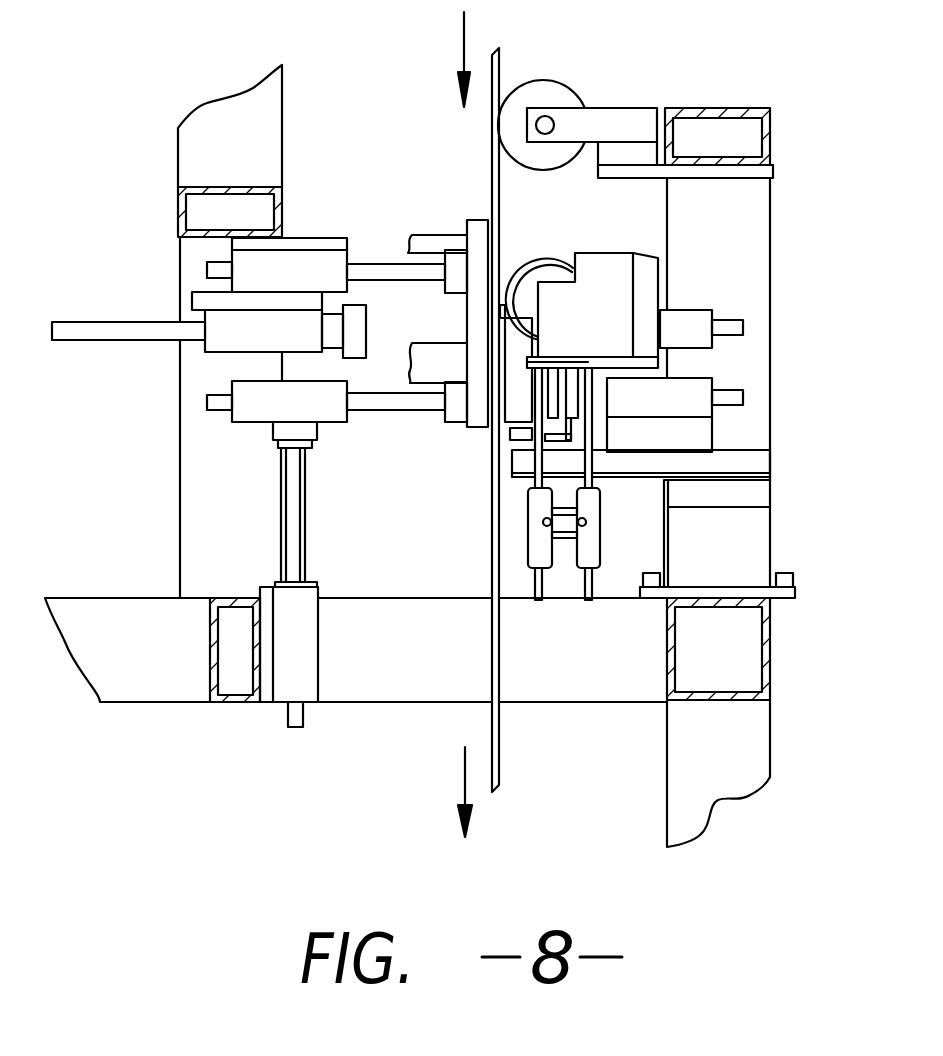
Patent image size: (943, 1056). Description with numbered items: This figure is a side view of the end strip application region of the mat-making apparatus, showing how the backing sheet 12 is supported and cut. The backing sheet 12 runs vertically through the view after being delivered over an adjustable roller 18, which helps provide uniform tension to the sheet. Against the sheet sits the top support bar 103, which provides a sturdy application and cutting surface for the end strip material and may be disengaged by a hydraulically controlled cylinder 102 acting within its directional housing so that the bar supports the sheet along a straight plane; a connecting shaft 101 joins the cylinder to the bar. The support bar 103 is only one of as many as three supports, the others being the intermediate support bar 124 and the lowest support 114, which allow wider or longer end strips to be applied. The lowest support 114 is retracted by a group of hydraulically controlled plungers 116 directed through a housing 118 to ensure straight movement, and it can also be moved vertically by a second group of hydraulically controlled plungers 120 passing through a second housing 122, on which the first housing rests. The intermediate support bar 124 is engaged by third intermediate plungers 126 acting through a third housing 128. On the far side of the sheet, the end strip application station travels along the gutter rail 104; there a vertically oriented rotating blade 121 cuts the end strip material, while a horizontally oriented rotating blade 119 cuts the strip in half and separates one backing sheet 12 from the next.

The backing sheet 12 is at (500, 735).
The adjustable roller 18 is at (550, 93).
The shaft 101 is at (365, 263).
The hydraulically controlled cylinder 102 is at (322, 263).
The support bar 103 is at (478, 218).
The gutter rail 104 is at (733, 543).
The lowest support 114 is at (450, 423).
The hydraulically controlled plunger 116 is at (363, 415).
The housing 118 is at (220, 417).
The horizontally oriented rotating blade 119 is at (525, 365).
The second hydraulically controlled plunger 120 is at (287, 712).
The vertically oriented rotating blade 121 is at (530, 272).
The second housing 122 is at (320, 660).
The support bar 124 is at (367, 320).
The third intermediate plunger 126 is at (140, 320).
The third housing 128 is at (222, 333).